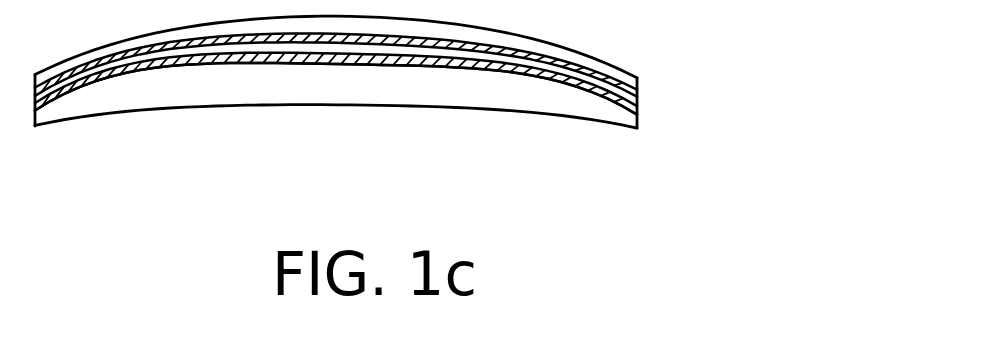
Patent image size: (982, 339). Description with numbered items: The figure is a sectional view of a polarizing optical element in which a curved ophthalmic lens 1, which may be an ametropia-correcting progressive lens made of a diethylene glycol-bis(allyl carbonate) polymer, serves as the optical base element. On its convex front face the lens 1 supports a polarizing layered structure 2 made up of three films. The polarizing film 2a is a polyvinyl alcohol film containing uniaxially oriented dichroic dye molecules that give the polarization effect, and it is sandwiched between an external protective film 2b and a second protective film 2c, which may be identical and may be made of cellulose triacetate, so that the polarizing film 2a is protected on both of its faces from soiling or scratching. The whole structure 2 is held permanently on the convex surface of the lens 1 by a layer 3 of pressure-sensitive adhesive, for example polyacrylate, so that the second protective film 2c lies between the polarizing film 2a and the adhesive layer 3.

The ophthalmic lens 1 is at (542, 100).
The polarizing layered structure 2 is at (418, 88).
The polarizing film 2a is at (638, 93).
The protective film 2b is at (638, 74).
The second protective film 2c is at (638, 107).
The layer of pressure-sensitive adhesive 3 is at (592, 93).